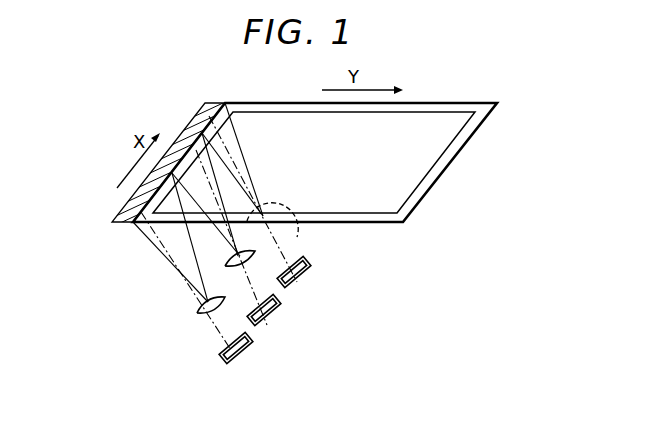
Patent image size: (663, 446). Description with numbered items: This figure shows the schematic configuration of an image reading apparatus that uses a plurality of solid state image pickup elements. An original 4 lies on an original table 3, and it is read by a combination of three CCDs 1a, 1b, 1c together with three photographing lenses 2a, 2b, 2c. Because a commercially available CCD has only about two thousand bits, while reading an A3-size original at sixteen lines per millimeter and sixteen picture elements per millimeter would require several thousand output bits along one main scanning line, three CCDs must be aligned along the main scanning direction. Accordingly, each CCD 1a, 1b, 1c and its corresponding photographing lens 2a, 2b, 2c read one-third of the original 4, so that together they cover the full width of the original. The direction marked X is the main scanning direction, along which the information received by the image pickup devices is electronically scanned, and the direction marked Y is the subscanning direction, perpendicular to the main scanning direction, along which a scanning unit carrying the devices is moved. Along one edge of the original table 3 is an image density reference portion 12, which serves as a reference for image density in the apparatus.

The CCD 1a is at (247, 352).
The CCD 1b is at (273, 318).
The CCD 1c is at (305, 278).
The photographing lens 2a is at (200, 309).
The photographing lens 2b is at (251, 262).
The photographing lens 2c is at (293, 233).
The original table 3 is at (458, 155).
The original 4 is at (379, 214).
The image density reference portion 12 is at (207, 104).